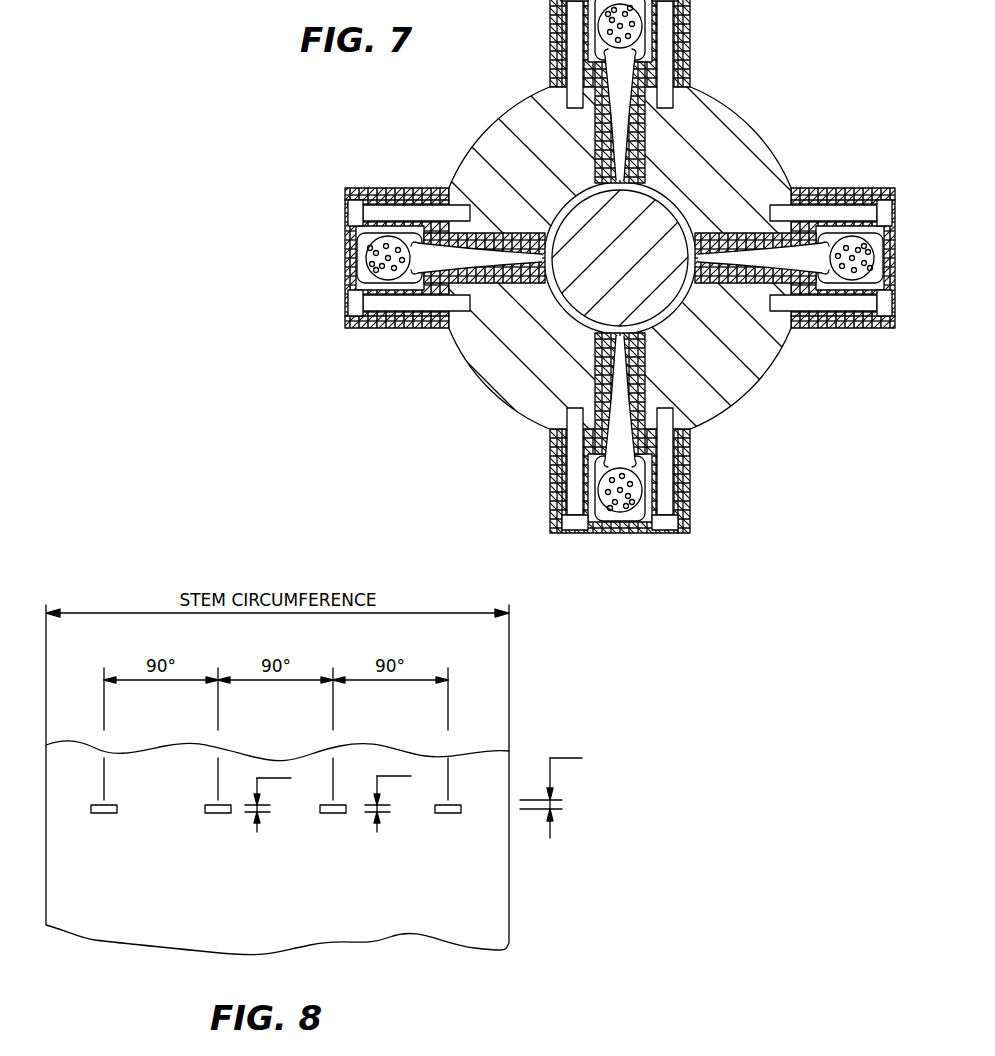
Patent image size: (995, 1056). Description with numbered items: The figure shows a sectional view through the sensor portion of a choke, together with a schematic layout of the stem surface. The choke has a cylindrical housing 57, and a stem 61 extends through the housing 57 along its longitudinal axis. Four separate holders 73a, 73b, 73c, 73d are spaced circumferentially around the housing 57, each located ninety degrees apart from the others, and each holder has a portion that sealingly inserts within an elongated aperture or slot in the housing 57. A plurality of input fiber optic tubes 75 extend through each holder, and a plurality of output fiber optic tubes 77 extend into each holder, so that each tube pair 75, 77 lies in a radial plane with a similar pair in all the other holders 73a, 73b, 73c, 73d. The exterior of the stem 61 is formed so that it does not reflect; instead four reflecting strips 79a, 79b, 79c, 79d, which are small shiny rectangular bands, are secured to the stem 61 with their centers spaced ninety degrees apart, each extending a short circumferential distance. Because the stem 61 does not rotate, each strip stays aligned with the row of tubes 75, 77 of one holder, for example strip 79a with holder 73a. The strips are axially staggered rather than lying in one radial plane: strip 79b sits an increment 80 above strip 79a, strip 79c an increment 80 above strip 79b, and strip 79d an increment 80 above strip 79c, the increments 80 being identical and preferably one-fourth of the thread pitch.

In FIG. 7, the housing 57 is at (737, 398).
In FIG. 7, the stem 61 is at (665, 213).
In FIG. 8, the stem 61 is at (132, 935).
In FIG. 7, the holder 73a is at (394, 327).
In FIG. 7, the holder 73b is at (690, 54).
In FIG. 7, the holder 73c is at (849, 337).
In FIG. 7, the holder 73d is at (694, 483).
In FIG. 7, the input fiber optic tube 75 is at (595, 130).
In FIG. 7, the output fiber optic tube 77 is at (643, 123).
In FIG. 8, the reflecting strip 79a is at (100, 818).
In FIG. 8, the reflecting strip 79b is at (214, 818).
In FIG. 8, the reflecting strip 79c is at (337, 818).
In FIG. 8, the reflecting strip 79d is at (452, 818).
In FIG. 8, the increment 80 is at (282, 798).